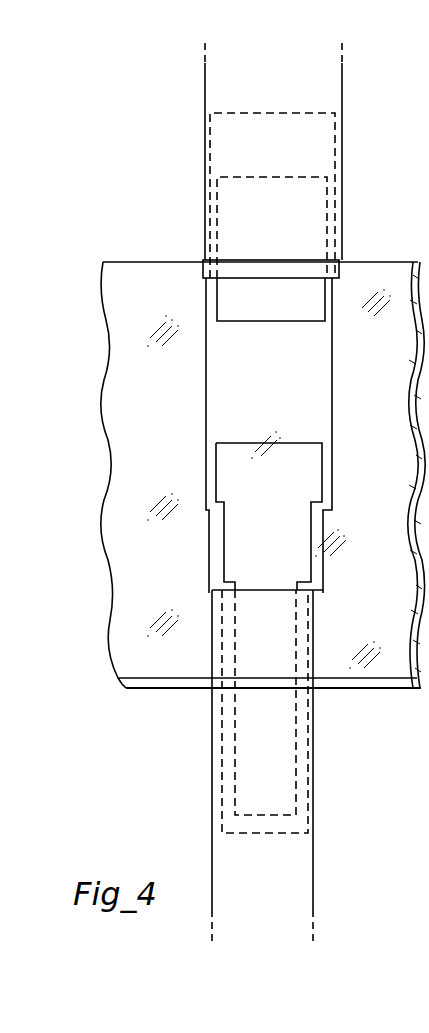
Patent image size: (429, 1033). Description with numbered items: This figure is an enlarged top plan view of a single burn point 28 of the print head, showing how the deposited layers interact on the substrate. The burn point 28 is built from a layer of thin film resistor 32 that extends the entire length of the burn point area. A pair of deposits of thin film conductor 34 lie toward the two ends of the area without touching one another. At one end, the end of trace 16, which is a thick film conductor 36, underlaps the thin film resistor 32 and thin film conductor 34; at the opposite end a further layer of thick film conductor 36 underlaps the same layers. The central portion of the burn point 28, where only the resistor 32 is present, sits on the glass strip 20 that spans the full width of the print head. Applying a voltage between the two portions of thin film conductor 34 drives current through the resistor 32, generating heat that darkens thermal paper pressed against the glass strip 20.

The trace 16 is at (246, 902).
The glass strip 20 is at (138, 410).
The burn point 28 is at (318, 378).
The thin film resistor 32 is at (258, 155).
The thin film conductor 34 is at (258, 312).
The thick film conductor 36 is at (258, 100).